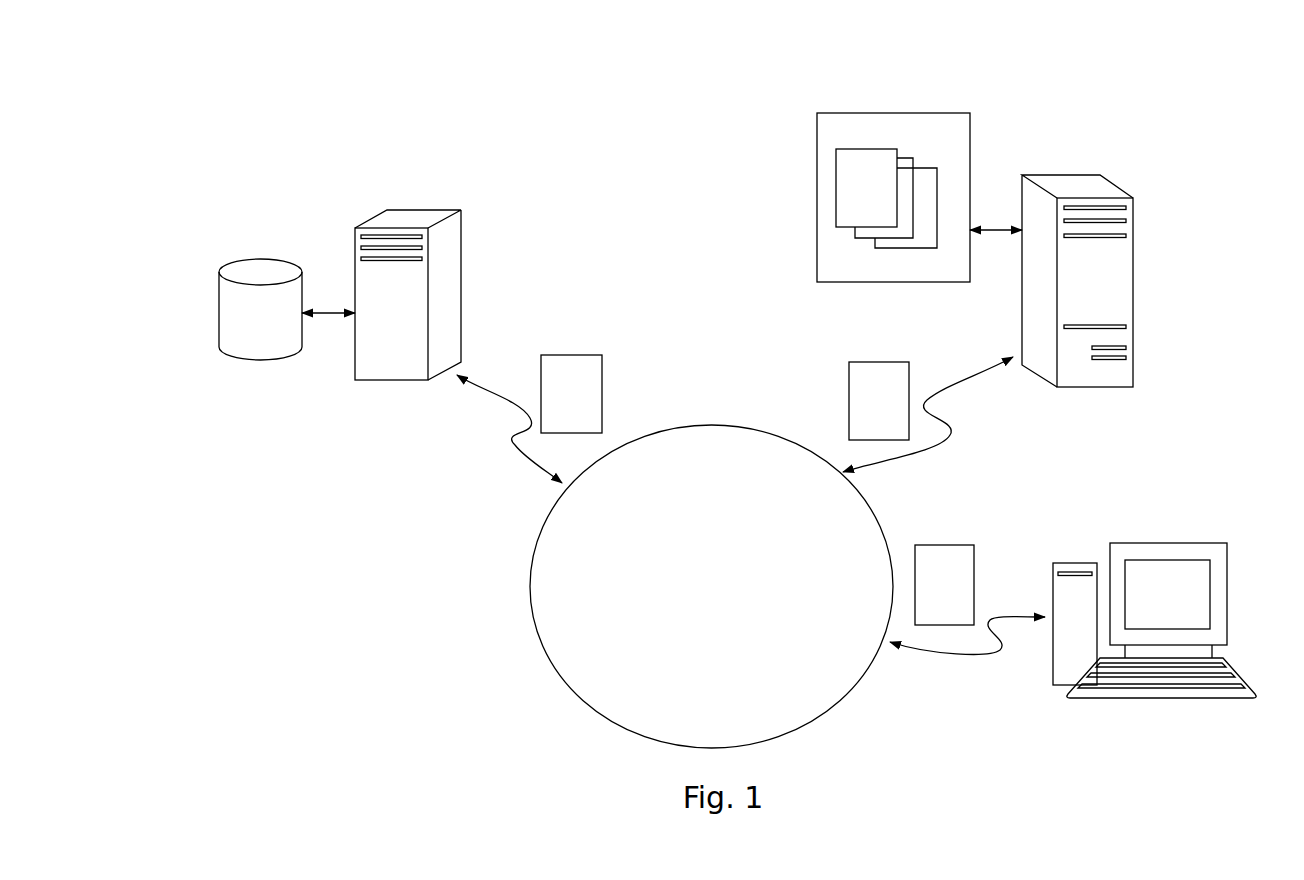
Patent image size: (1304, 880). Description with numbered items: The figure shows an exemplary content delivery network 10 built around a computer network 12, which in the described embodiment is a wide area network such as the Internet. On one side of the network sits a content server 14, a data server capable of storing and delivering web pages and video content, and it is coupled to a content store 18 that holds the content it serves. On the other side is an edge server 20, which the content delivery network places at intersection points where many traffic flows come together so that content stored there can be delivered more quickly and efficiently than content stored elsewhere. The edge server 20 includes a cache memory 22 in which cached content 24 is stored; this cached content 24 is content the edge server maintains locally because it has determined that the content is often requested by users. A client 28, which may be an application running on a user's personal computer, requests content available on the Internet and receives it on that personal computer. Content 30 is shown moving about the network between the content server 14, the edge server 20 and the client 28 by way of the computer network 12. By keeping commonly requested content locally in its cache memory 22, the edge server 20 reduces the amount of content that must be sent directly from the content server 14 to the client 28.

The content delivery network 10 is at (1190, 68).
The computer network 12 is at (583, 703).
The content server 14 is at (462, 247).
The content store 18 is at (217, 335).
The edge server 20 is at (1133, 225).
The cache memory 22 is at (817, 141).
The cached content 24 is at (836, 193).
The client 28 is at (1205, 543).
The content 30 is at (602, 382).